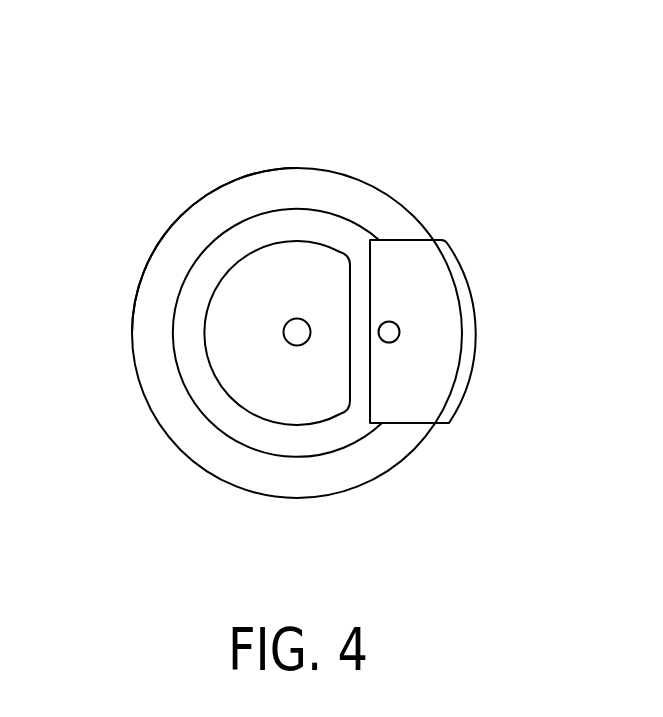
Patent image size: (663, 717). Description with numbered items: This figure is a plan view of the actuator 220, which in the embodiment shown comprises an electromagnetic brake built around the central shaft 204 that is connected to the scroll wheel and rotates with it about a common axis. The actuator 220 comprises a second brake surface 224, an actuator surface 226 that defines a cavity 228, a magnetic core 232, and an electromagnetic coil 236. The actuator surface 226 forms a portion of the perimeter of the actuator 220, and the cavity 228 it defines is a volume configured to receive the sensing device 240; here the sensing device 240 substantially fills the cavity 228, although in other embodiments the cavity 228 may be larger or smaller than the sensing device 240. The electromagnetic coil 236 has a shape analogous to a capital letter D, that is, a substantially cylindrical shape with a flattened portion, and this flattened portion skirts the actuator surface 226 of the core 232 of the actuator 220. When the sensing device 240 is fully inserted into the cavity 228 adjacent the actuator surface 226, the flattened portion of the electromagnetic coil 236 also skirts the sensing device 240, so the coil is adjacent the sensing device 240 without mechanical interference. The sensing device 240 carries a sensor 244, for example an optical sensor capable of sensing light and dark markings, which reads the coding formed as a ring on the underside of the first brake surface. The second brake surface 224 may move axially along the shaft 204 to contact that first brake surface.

The actuator 220 is at (195, 64).
The shaft 204 is at (297, 332).
The second brake surface 224 is at (190, 232).
The actuator surface 226 is at (402, 238).
The cavity 228 is at (491, 366).
The magnetic core 232 is at (131, 333).
The electromagnetic coil 236 is at (338, 230).
The sensing device 240 is at (442, 279).
The sensor 244 is at (393, 332).